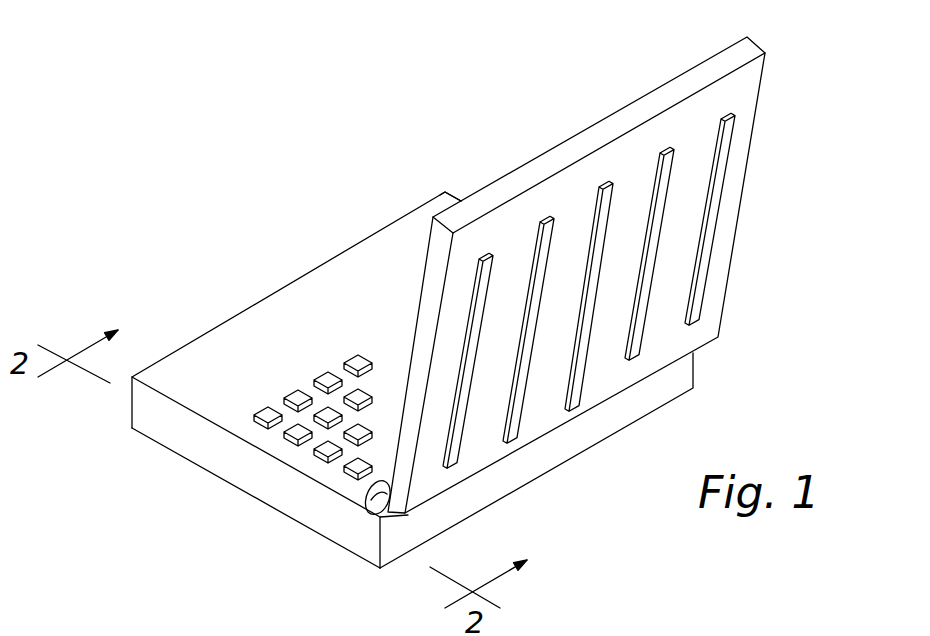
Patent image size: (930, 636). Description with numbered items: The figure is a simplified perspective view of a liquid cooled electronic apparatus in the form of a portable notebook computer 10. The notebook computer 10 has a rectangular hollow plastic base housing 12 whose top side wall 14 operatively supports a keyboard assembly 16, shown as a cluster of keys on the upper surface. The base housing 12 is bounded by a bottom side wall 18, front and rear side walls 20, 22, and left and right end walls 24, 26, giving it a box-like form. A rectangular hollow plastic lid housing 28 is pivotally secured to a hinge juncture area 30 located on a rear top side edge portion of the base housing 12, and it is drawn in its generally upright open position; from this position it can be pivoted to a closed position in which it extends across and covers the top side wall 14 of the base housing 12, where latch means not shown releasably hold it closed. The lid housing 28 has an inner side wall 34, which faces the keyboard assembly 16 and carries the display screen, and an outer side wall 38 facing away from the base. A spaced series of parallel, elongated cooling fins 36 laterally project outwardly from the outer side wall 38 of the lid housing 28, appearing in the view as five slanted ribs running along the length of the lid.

The portable notebook computer 10 is at (284, 160).
The base housing 12 is at (220, 316).
The top side wall 14 is at (343, 316).
The keyboard assembly 16 is at (282, 390).
The bottom side wall 18 is at (213, 476).
The front side wall 20 is at (132, 415).
The rear side wall 22 is at (582, 432).
The left end wall 24 is at (449, 198).
The right end wall 26 is at (250, 467).
The lid housing 28 is at (622, 106).
The hinge juncture area 30 is at (370, 510).
The inner side wall 34 is at (422, 275).
The cooling fins 36 is at (717, 230).
The outer side wall 38 is at (740, 152).